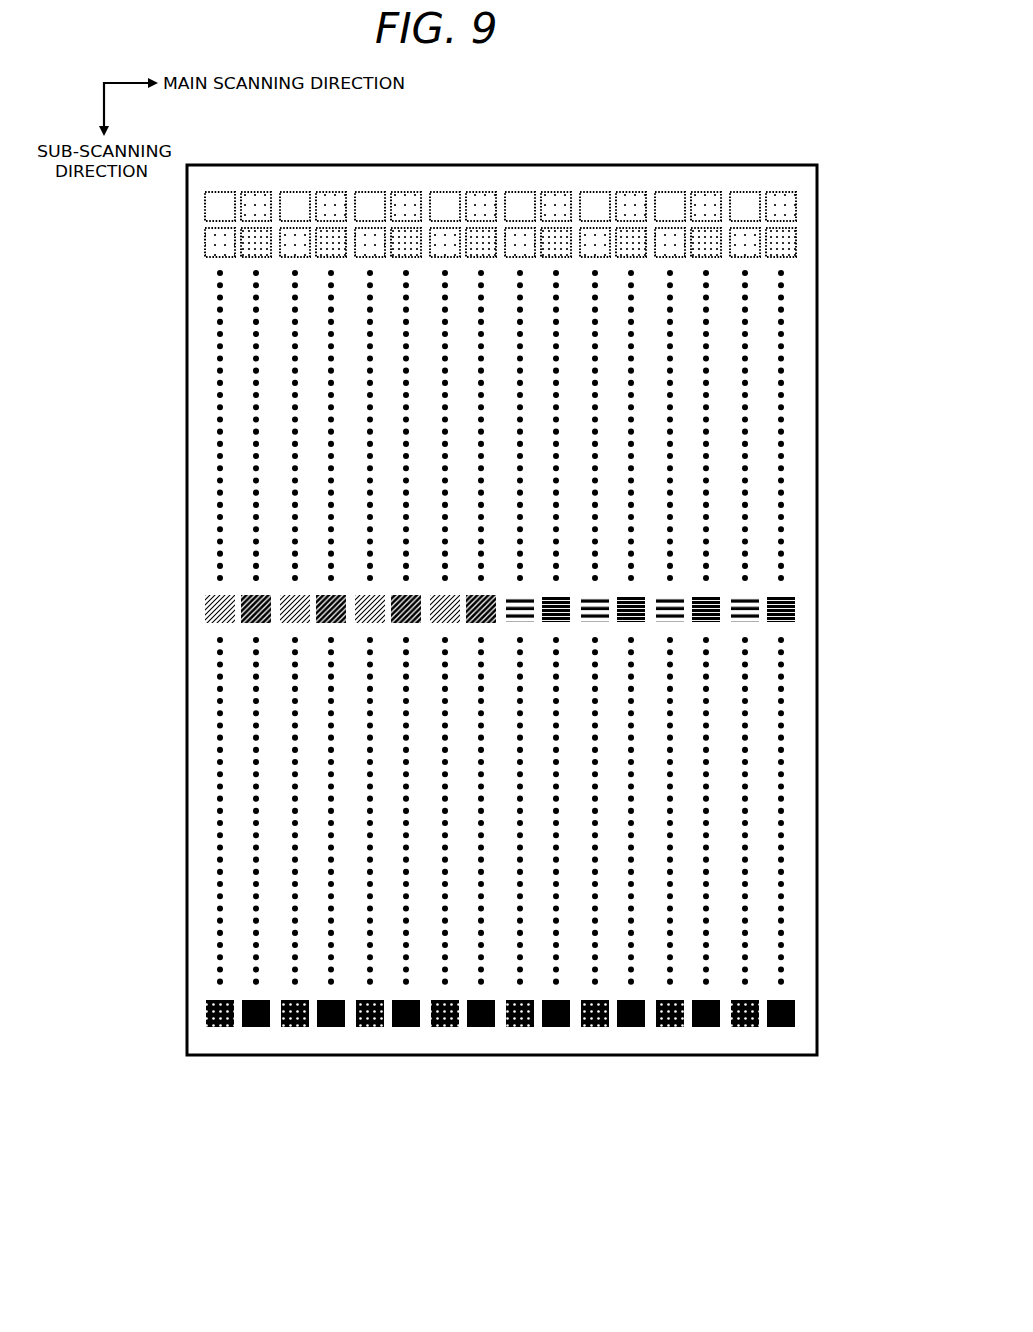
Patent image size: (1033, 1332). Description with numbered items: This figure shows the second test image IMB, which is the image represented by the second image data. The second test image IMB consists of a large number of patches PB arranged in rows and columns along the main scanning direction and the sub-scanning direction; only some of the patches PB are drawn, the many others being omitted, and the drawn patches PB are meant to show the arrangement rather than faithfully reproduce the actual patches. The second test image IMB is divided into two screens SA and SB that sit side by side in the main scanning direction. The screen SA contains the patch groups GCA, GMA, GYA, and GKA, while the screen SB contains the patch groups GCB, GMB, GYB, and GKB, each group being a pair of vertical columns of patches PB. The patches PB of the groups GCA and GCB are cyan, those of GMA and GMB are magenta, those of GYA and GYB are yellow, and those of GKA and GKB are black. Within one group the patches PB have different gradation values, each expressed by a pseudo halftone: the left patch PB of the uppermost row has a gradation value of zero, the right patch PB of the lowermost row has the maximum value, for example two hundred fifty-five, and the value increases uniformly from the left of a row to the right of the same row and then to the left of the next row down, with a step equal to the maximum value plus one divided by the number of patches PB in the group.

The patch PB is at (206, 207).
The second test image IMB is at (606, 165).
The patch group GCA is at (271, 1068).
The patch group GMA is at (346, 1068).
The patch group GYA is at (421, 1068).
The patch group GKA is at (462, 697).
The patch group GCB is at (571, 1068).
The patch group GMB is at (646, 1068).
The patch group GYB is at (721, 1068).
The patch group GKB is at (762, 697).
The screen SA is at (350, 738).
The screen SB is at (651, 738).